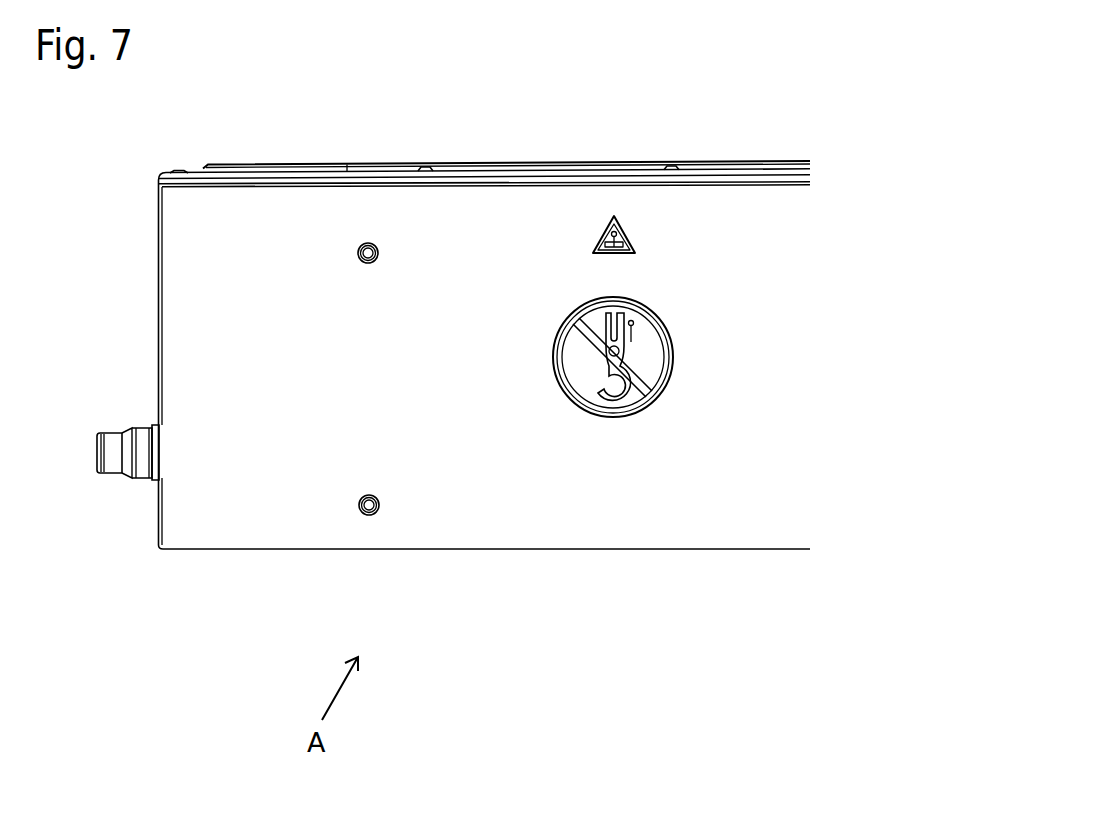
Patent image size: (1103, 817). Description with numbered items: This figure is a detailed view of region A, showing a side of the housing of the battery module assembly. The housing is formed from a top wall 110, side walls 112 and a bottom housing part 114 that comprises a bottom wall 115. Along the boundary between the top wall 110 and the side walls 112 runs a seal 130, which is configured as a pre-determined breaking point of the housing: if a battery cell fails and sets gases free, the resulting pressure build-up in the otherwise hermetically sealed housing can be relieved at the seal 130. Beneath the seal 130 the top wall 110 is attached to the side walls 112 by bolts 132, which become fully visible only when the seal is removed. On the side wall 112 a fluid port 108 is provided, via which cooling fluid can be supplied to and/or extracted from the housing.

The fluid port 108 is at (143, 478).
The top wall 110 is at (595, 165).
The side walls 112 is at (158, 320).
The bottom housing part 114 is at (310, 523).
The bottom wall 115 is at (647, 550).
The seal 130 is at (318, 182).
The bolts 132 is at (180, 170).